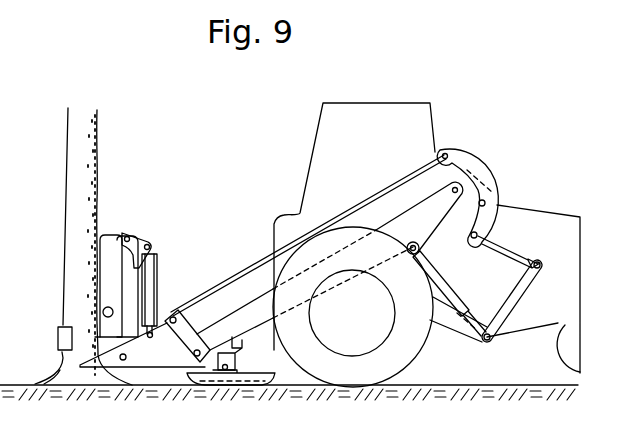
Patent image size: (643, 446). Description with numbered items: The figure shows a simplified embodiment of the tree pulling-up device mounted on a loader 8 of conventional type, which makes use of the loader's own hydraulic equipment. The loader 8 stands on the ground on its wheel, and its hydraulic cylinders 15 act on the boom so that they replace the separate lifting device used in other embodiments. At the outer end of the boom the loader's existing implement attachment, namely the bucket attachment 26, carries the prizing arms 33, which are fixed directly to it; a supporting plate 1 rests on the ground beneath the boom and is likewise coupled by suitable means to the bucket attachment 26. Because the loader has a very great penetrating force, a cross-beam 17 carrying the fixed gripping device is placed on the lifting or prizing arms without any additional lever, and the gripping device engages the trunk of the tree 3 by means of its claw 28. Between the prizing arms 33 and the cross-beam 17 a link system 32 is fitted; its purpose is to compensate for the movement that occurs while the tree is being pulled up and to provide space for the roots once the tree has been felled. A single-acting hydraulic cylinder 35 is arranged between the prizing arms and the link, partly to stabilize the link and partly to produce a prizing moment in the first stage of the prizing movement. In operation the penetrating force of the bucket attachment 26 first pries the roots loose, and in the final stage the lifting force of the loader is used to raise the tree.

The supporting plate 1 is at (248, 377).
The tree 3 is at (67, 172).
The loader 8 is at (373, 102).
The hydraulic cylinders 15 is at (445, 285).
The cross-beam 17 is at (105, 327).
The bucket attachment 26 is at (183, 340).
The claw 28 is at (58, 330).
The link system 32 is at (113, 241).
The prizing arms 33 is at (141, 360).
The hydraulic cylinder 35 is at (157, 288).